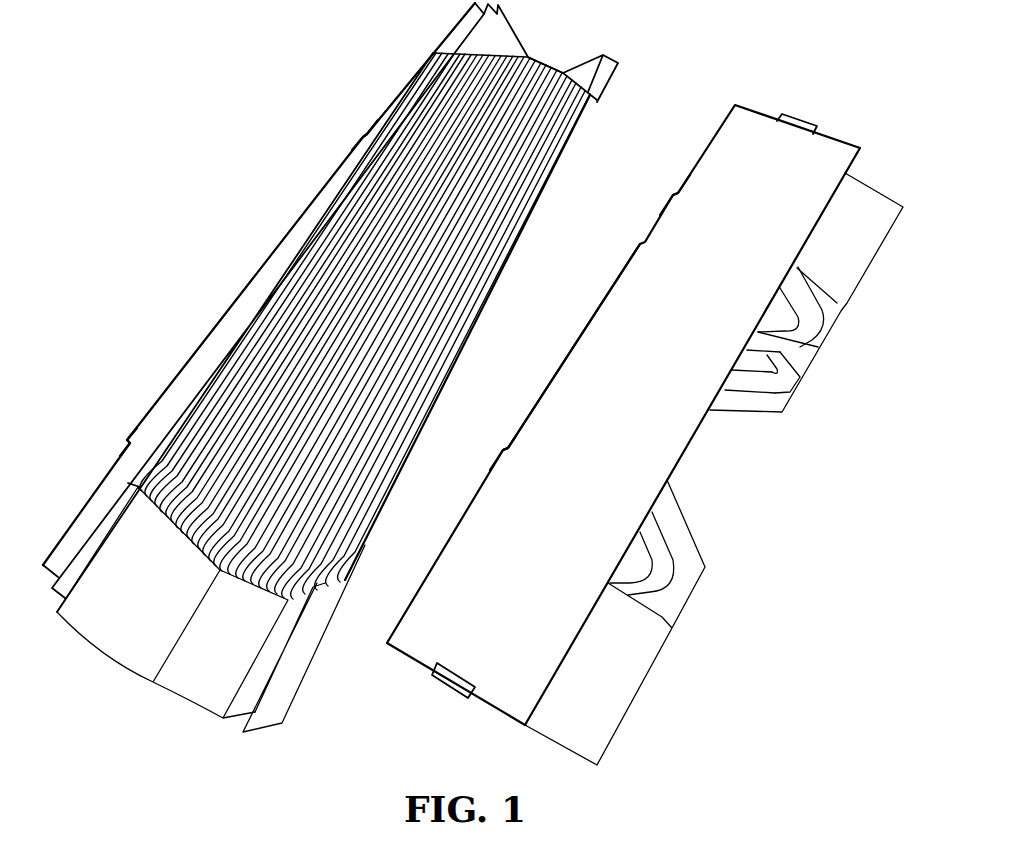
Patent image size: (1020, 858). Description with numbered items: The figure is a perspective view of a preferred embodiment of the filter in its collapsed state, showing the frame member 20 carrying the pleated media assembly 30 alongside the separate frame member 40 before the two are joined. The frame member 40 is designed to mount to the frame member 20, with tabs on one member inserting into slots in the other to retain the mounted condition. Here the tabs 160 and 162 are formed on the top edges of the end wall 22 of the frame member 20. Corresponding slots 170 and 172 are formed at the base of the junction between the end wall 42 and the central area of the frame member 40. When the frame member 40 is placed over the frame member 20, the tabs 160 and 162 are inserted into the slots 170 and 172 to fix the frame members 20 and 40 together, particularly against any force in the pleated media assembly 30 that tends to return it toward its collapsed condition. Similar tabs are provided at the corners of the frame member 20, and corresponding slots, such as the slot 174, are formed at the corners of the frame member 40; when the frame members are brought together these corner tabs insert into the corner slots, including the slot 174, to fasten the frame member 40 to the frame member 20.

The frame member 20 is at (244, 637).
The end wall 22 is at (156, 398).
The pleated media assembly 30 is at (519, 92).
The frame member 40 is at (738, 146).
The end wall 42 is at (590, 319).
The tab 160 is at (219, 308).
The tab 162 is at (361, 130).
The slot 170 is at (487, 468).
The slot 172 is at (656, 210).
The slot 174 is at (794, 116).